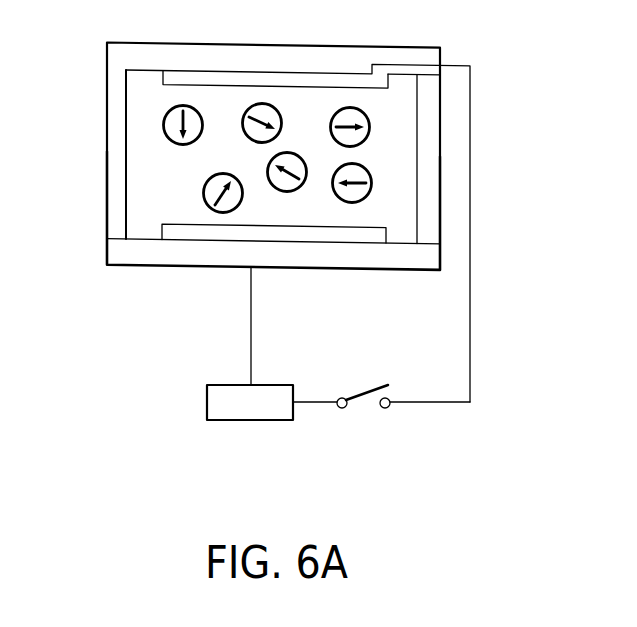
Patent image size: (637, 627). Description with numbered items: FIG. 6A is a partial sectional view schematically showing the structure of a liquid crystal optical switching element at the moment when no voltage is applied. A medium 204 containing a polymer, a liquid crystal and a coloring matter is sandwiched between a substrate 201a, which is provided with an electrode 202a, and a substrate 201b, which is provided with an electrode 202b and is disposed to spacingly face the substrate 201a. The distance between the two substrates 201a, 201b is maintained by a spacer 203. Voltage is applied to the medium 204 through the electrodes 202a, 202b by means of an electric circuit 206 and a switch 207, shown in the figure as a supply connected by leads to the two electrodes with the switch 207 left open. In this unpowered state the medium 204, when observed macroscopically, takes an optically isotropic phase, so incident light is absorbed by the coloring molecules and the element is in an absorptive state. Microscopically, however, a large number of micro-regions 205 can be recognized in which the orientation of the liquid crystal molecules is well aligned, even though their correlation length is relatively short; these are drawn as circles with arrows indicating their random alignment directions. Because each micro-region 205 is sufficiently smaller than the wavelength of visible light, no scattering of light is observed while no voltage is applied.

The substrate 201a is at (432, 43).
The substrate 201b is at (343, 257).
The electrode 202a is at (175, 75).
The electrode 202b is at (171, 230).
The spacer 203 is at (116, 117).
The medium 204 is at (132, 218).
The micro-regions 205 is at (168, 136).
The electric circuit 206 is at (232, 420).
The switch 207 is at (350, 404).